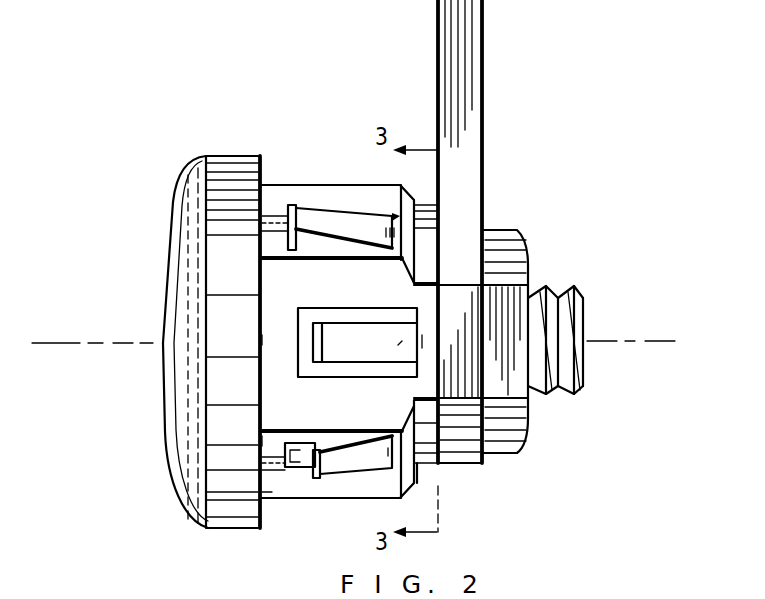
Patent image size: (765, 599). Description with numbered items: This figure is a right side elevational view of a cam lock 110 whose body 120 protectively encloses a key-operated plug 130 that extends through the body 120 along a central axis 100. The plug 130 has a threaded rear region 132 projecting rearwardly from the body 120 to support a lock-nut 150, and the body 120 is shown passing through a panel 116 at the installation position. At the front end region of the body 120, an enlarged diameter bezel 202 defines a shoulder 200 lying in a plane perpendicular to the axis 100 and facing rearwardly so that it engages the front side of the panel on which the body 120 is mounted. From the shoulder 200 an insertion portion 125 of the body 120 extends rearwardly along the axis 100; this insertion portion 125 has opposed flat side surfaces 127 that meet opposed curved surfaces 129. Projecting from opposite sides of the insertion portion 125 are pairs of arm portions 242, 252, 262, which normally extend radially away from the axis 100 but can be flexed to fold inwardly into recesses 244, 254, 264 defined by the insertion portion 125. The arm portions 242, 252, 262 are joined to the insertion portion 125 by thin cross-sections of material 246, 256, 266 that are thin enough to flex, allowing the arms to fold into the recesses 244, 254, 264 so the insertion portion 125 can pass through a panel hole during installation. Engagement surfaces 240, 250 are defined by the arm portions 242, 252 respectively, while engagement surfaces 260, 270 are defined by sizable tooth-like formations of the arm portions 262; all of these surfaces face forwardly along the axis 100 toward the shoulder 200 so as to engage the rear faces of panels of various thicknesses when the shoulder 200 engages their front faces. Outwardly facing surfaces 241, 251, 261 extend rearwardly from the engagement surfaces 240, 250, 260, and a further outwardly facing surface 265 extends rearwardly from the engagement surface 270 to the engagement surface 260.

The central axis 100 is at (72, 352).
The cam lock 110 is at (142, 148).
The panel 116 is at (488, 37).
The body 120 is at (284, 165).
The insertion portion 125 is at (331, 506).
The flat side surfaces 127 is at (270, 335).
The curved surfaces 129 is at (393, 175).
The key-operated plug 130 is at (160, 452).
The threaded rear region 132 is at (562, 290).
The lock-nut 150 is at (499, 230).
The shoulder 200 is at (262, 298).
The bezel 202 is at (233, 524).
The engagement surface 240 is at (288, 232).
The outwardly facing surface 241 is at (331, 220).
The arm portion 242 is at (309, 211).
The recess 244 is at (402, 190).
The thin cross-section of material 246 is at (410, 225).
The engagement surface 250 is at (290, 345).
The outwardly facing surface 251 is at (298, 376).
The arm portion 252 is at (353, 352).
The recess 254 is at (411, 317).
The thin cross-section of material 256 is at (398, 345).
The engagement surface 260 is at (282, 443).
The outwardly facing surface 261 is at (418, 480).
The arm portion 262 is at (331, 446).
The recess 264 is at (272, 493).
The outwardly facing surface 265 is at (263, 440).
The thin cross-section of material 266 is at (437, 478).
The engagement surface 270 is at (292, 470).